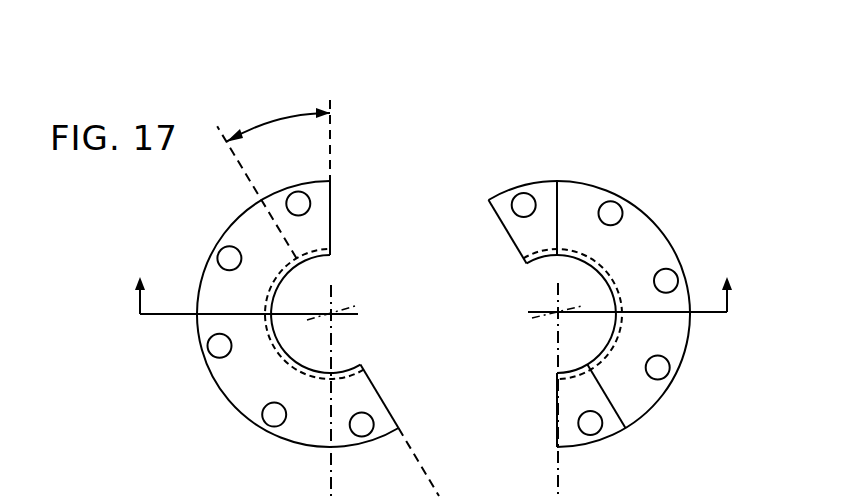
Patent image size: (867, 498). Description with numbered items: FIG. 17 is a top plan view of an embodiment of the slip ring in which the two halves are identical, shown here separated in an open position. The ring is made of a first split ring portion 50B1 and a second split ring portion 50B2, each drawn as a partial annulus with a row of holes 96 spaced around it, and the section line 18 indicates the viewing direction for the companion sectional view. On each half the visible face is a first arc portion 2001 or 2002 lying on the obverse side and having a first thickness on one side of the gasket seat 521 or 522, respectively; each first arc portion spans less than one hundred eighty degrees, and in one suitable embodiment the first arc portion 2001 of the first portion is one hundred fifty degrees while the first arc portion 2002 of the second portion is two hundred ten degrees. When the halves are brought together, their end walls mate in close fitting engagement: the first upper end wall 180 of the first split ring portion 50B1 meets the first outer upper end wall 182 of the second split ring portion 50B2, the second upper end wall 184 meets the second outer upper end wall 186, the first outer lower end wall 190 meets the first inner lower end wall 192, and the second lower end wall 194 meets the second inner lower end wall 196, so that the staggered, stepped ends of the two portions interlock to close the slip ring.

The section line / viewing direction 18 is at (430, 276).
The first split ring portion 50B1 is at (690, 333).
The second split ring portion 50B2 is at (198, 338).
The gasket seat 521 is at (617, 277).
The gasket seat 522 is at (297, 369).
The holes 96 is at (296, 204).
The first upper end wall 180 is at (622, 420).
The first outer upper end wall 182 is at (381, 399).
The second upper end wall 184 is at (554, 198).
The second outer upper end wall 186 is at (333, 216).
The first outer lower end wall 190 is at (560, 413).
The first inner lower end wall 192 is at (343, 396).
The second lower end wall 194 is at (510, 233).
The second inner lower end wall 196 is at (276, 215).
The first arc portion 2001 is at (630, 255).
The first arc portion 2002 is at (263, 377).